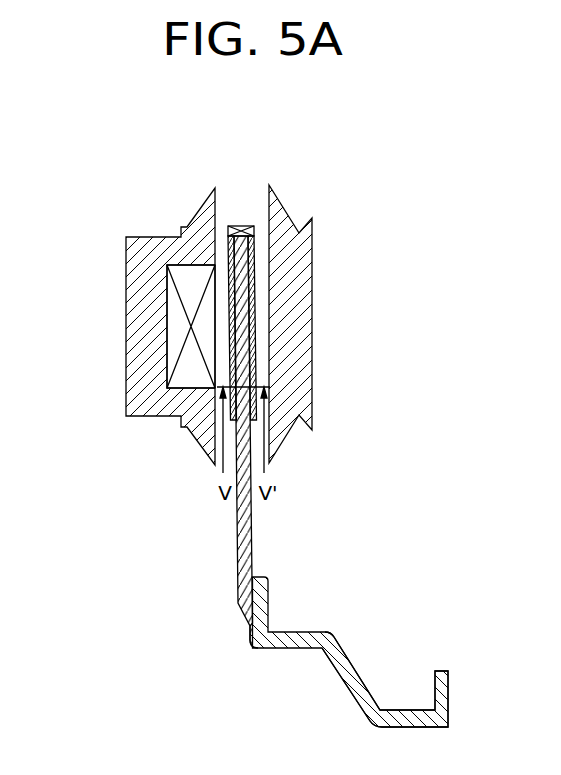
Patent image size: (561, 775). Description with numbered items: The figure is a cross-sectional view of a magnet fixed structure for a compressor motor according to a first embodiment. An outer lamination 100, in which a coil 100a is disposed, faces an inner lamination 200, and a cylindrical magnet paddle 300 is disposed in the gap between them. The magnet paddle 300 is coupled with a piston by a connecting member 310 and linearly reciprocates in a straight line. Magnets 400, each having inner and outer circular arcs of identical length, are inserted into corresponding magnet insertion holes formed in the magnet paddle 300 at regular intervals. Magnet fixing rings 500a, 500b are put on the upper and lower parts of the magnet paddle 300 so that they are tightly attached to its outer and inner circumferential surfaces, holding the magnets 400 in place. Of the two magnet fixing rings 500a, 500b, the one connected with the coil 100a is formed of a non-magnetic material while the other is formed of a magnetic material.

The outer lamination 100 is at (150, 237).
The coil 100a is at (167, 325).
The inner lamination 200 is at (281, 205).
The magnet paddle 300 is at (238, 583).
The connecting member 310 is at (283, 648).
The magnet 400 is at (242, 226).
The magnet fixing ring 500a is at (229, 226).
The magnet fixing ring 500b is at (252, 226).